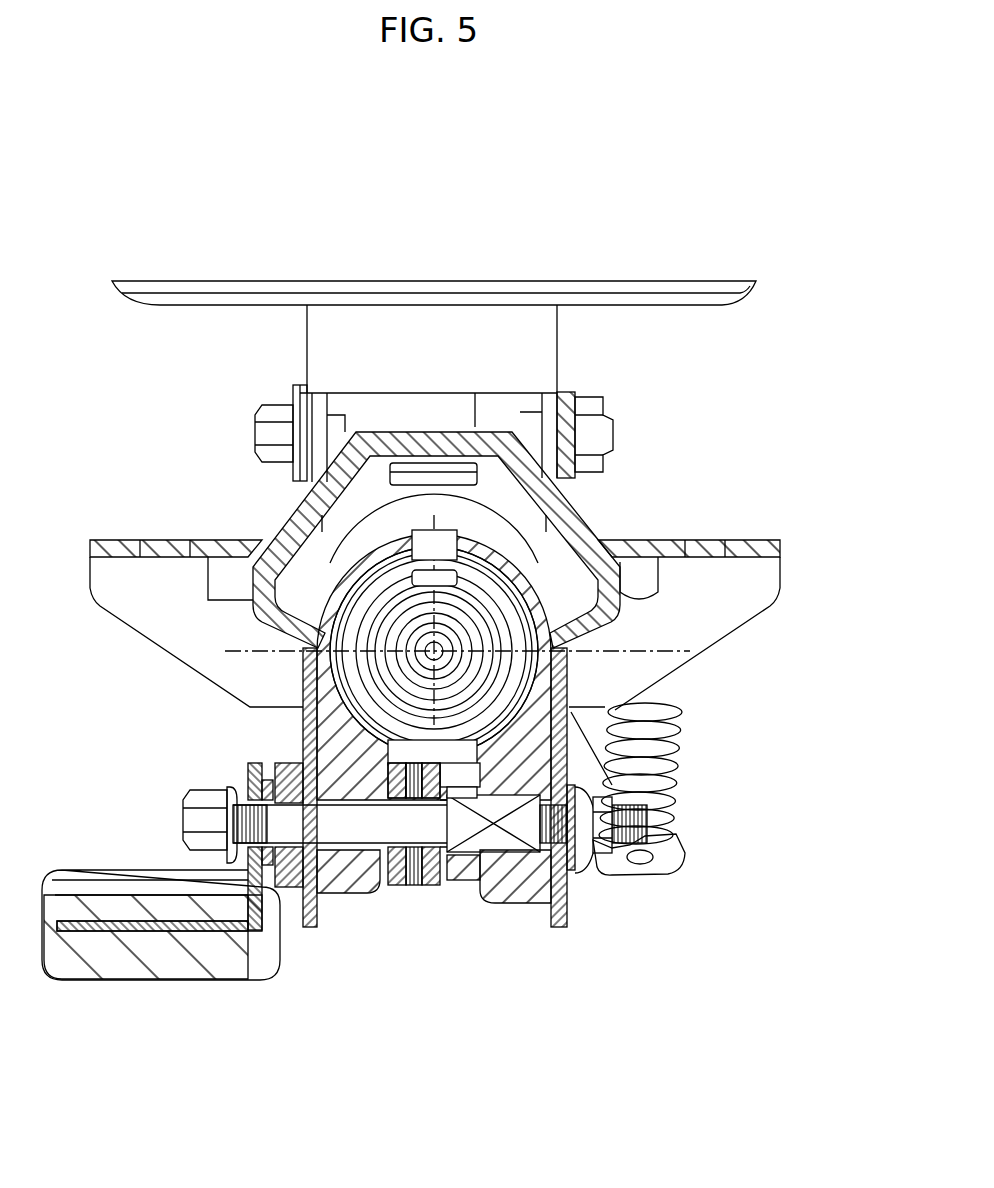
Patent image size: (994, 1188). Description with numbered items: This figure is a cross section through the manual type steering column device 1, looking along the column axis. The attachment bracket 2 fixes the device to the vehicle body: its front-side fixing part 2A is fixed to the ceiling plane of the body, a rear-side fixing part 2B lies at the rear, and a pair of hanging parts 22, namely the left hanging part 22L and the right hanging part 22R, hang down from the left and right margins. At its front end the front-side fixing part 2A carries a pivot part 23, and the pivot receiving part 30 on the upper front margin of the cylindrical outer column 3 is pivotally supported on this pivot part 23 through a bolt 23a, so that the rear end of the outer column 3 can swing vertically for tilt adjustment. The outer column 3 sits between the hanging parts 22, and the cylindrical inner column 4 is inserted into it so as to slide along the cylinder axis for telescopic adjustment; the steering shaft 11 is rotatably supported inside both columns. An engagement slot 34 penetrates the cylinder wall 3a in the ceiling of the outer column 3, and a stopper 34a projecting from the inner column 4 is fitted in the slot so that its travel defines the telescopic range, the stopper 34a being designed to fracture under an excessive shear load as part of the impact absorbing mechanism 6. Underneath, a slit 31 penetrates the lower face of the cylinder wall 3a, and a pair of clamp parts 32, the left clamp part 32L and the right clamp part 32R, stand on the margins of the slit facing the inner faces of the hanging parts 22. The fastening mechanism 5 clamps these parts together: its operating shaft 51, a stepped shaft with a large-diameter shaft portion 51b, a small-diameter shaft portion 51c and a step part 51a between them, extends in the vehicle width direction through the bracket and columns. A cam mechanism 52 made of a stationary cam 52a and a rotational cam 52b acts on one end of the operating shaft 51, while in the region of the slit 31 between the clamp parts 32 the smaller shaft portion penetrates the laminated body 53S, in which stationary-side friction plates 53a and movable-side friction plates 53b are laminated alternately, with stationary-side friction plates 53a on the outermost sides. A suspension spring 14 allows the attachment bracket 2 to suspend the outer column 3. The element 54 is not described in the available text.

The steering column device 1 is at (225, 152).
The attachment bracket 2 is at (702, 266).
The front-side fixing part 2A is at (722, 307).
The rear-side fixing part 2B is at (745, 557).
The outer column 3 is at (518, 500).
The cylinder wall 3a is at (353, 572).
The inner column 4 is at (322, 565).
The fastening mechanism 5 is at (290, 963).
The impact absorbing mechanism 6 is at (407, 940).
The steering shaft 11 is at (270, 622).
The suspension spring 14 is at (674, 720).
The hanging parts 22 is at (456, 671).
The hanging part 22L is at (303, 668).
The hanging part 22R is at (612, 672).
The pivot part 23 is at (306, 332).
The bolt 23a is at (272, 412).
The pivot receiving part 30 is at (358, 408).
The slit 31 is at (500, 837).
The clamp parts 32 is at (482, 847).
The clamp part 32L is at (343, 888).
The clamp part 32R is at (560, 905).
The engagement slot 34 is at (423, 526).
The stopper 34a is at (477, 540).
The operating shaft 51 is at (652, 835).
The step part 51a is at (463, 878).
The large-diameter shaft portion 51b is at (520, 875).
The small-diameter shaft portion 51c is at (345, 818).
The cam mechanism 52 is at (108, 730).
The stationary cam 52a is at (280, 770).
The rotational cam 52b is at (247, 777).
The stationary-side friction plate 53a is at (395, 890).
The movable-side friction plate 53b is at (420, 888).
The laminated body 53S is at (403, 912).
The stopper rubber 54 is at (97, 975).